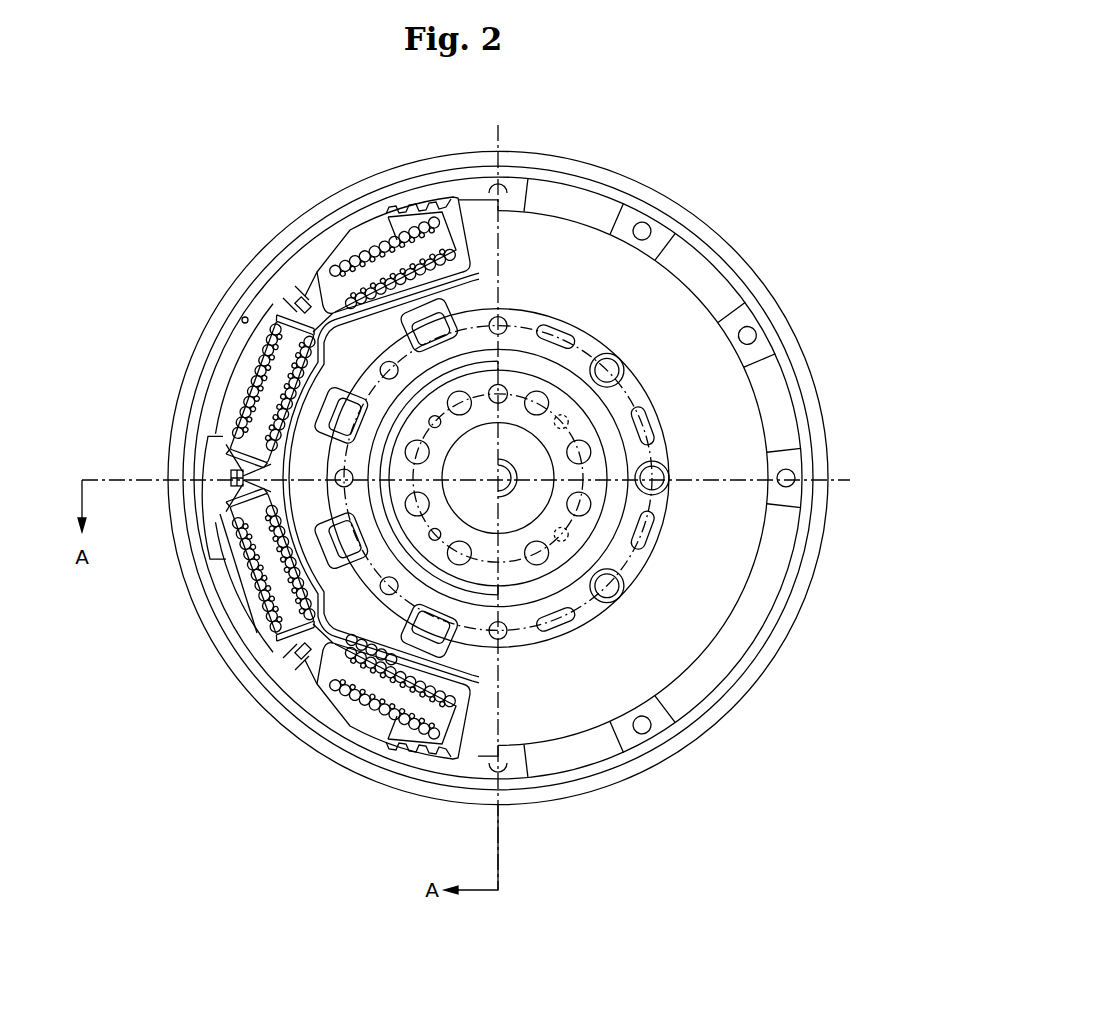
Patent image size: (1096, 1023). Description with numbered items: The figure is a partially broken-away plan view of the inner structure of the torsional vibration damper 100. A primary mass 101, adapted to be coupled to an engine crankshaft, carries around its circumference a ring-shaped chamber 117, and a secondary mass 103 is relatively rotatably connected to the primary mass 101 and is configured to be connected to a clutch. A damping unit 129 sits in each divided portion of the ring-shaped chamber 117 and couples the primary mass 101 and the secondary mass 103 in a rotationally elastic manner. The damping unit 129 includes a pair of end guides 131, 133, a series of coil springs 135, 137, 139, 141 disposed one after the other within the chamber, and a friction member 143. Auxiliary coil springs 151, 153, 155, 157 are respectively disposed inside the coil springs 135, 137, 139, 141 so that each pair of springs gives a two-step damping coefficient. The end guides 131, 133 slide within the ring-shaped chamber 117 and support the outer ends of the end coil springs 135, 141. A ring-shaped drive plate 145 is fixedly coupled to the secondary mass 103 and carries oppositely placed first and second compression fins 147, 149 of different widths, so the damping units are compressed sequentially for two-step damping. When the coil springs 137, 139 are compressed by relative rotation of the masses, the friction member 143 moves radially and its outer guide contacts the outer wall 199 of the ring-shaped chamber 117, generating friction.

The torsional vibration damper 100 is at (699, 184).
The primary mass 101 is at (228, 652).
The secondary mass 103 is at (683, 307).
The ring-shaped chamber 117 is at (250, 592).
The damping unit 129 is at (194, 509).
The end guide 131 is at (426, 755).
The end guide 133 is at (422, 205).
The coil spring 135 is at (373, 712).
The coil spring 137 is at (252, 574).
The coil spring 139 is at (255, 376).
The coil spring 141 is at (382, 245).
The friction member 143 is at (275, 288).
The drive plate 145 is at (352, 698).
The first compression fin 147 is at (489, 756).
The second compression fin 149 is at (476, 198).
The auxiliary coil spring 151 is at (378, 712).
The auxiliary coil spring 153 is at (255, 586).
The auxiliary coil spring 155 is at (248, 392).
The auxiliary coil spring 157 is at (357, 232).
The outer wall 199 is at (241, 318).